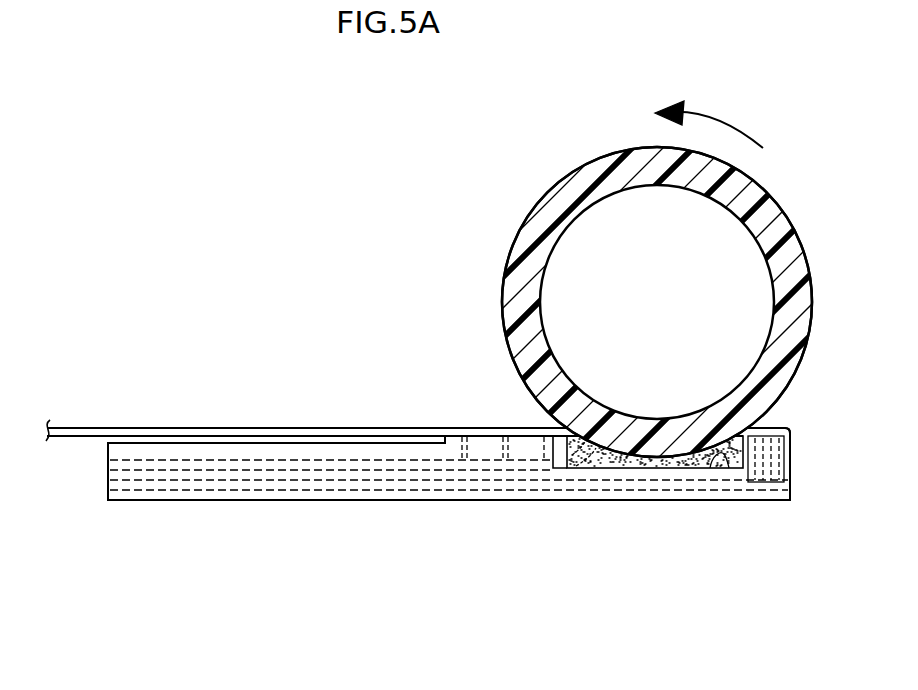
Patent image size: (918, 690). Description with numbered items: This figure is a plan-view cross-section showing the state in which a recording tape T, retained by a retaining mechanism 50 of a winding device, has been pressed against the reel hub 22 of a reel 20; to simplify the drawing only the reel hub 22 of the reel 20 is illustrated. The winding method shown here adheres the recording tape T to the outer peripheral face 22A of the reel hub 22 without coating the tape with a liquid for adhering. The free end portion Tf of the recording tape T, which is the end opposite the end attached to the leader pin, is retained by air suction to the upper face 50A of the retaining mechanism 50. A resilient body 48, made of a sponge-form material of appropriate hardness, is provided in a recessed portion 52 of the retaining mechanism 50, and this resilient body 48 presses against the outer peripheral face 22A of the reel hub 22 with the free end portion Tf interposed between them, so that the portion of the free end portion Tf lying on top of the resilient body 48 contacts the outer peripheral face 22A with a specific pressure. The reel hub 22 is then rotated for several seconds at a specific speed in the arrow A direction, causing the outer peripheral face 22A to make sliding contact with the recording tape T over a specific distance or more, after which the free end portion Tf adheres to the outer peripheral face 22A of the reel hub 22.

The reel 20 is at (584, 280).
The reel hub 22 is at (584, 300).
The outer peripheral face 22A is at (510, 246).
The retaining mechanism 50 is at (449, 480).
The upper face 50A is at (497, 430).
The resilient body 48 is at (587, 468).
The recessed portion 52 is at (717, 468).
The recording tape T is at (281, 427).
The free end portion Tf is at (772, 428).
The arrow A direction A is at (709, 122).